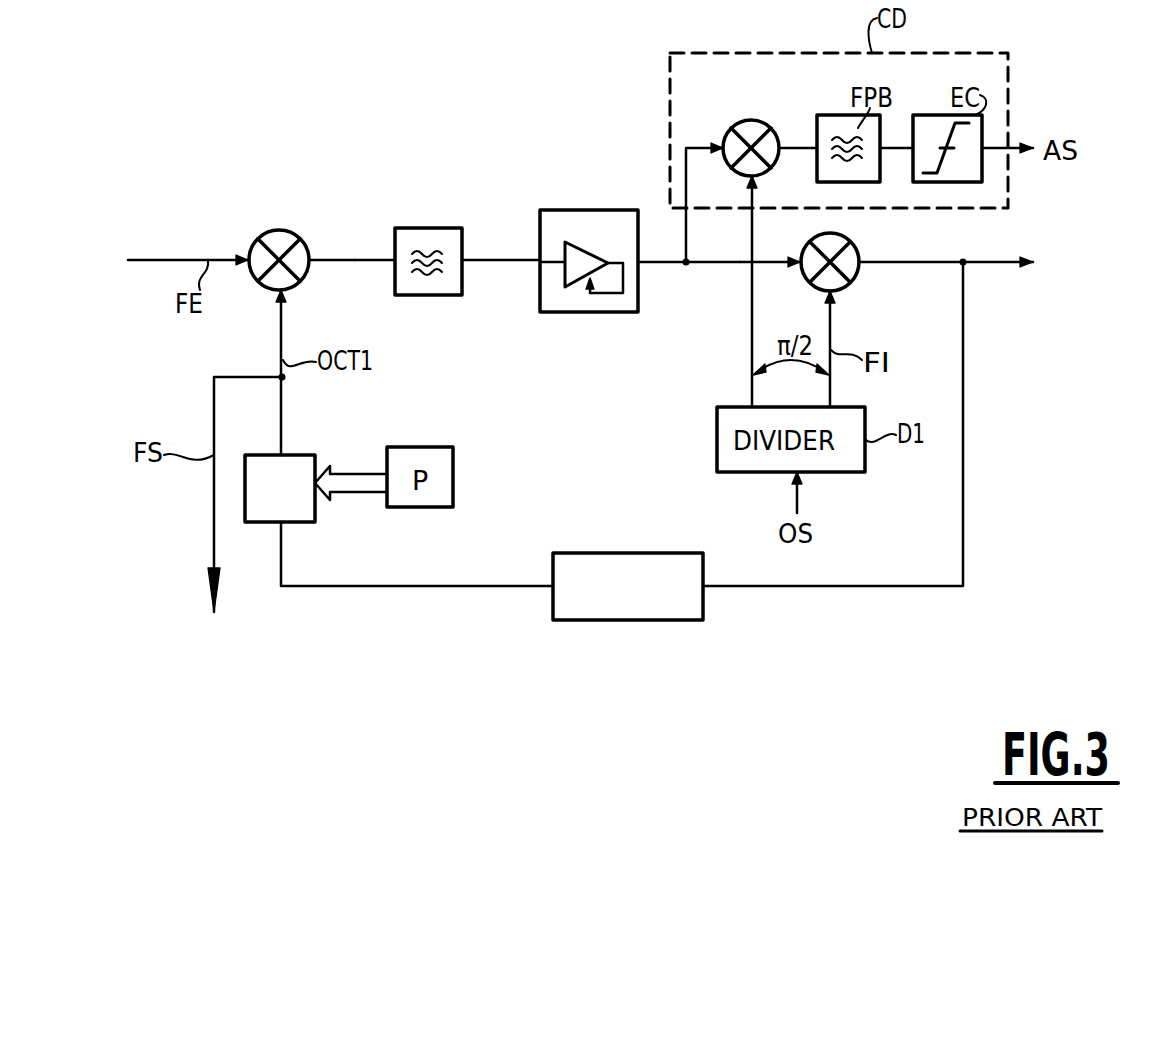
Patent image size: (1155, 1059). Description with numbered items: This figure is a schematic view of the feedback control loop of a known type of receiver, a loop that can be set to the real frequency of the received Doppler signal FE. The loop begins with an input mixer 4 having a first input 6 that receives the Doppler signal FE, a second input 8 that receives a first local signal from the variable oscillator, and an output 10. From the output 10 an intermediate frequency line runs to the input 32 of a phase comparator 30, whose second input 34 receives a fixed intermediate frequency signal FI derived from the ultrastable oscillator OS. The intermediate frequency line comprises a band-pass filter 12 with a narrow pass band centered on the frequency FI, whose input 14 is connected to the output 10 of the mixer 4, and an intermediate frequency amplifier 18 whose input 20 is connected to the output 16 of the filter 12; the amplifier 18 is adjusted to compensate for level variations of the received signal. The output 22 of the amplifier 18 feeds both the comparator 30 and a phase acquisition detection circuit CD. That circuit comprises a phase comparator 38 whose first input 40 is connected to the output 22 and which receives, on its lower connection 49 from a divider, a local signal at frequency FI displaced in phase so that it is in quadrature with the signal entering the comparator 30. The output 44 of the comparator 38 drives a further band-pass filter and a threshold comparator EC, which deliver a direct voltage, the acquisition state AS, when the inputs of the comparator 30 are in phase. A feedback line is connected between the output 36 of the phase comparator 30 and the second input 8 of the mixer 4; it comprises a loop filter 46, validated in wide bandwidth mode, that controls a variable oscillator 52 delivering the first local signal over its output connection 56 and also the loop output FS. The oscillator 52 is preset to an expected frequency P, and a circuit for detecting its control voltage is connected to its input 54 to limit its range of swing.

The input mixer 4 is at (288, 231).
The first input of input mixer 6 is at (248, 248).
The second input of input mixer 8 is at (277, 293).
The output of input mixer 10 is at (312, 253).
The band-pass filter 12 is at (430, 229).
The input of band-pass filter 14 is at (393, 258).
The output of band-pass filter 16 is at (463, 258).
The intermediate frequency amplifier 18 is at (590, 210).
The input of intermediate frequency amplifier 20 is at (540, 268).
The output of intermediate frequency amplifier 22 is at (642, 260).
The phase comparator 30 is at (845, 236).
The input of phase comparator 32 is at (801, 255).
The second input of phase comparator 34 is at (834, 294).
The output of phase comparator 36 is at (863, 258).
The phase comparator of detection circuit 38 is at (738, 122).
The first input of detection comparator 40 is at (723, 137).
The output of detection comparator 44 is at (779, 162).
The loop filter 46 is at (613, 553).
The second input of third mixer 49 is at (745, 180).
The variable oscillator 52 is at (300, 470).
The input of local oscillator 54 is at (285, 525).
The oscillator output 56 is at (278, 455).